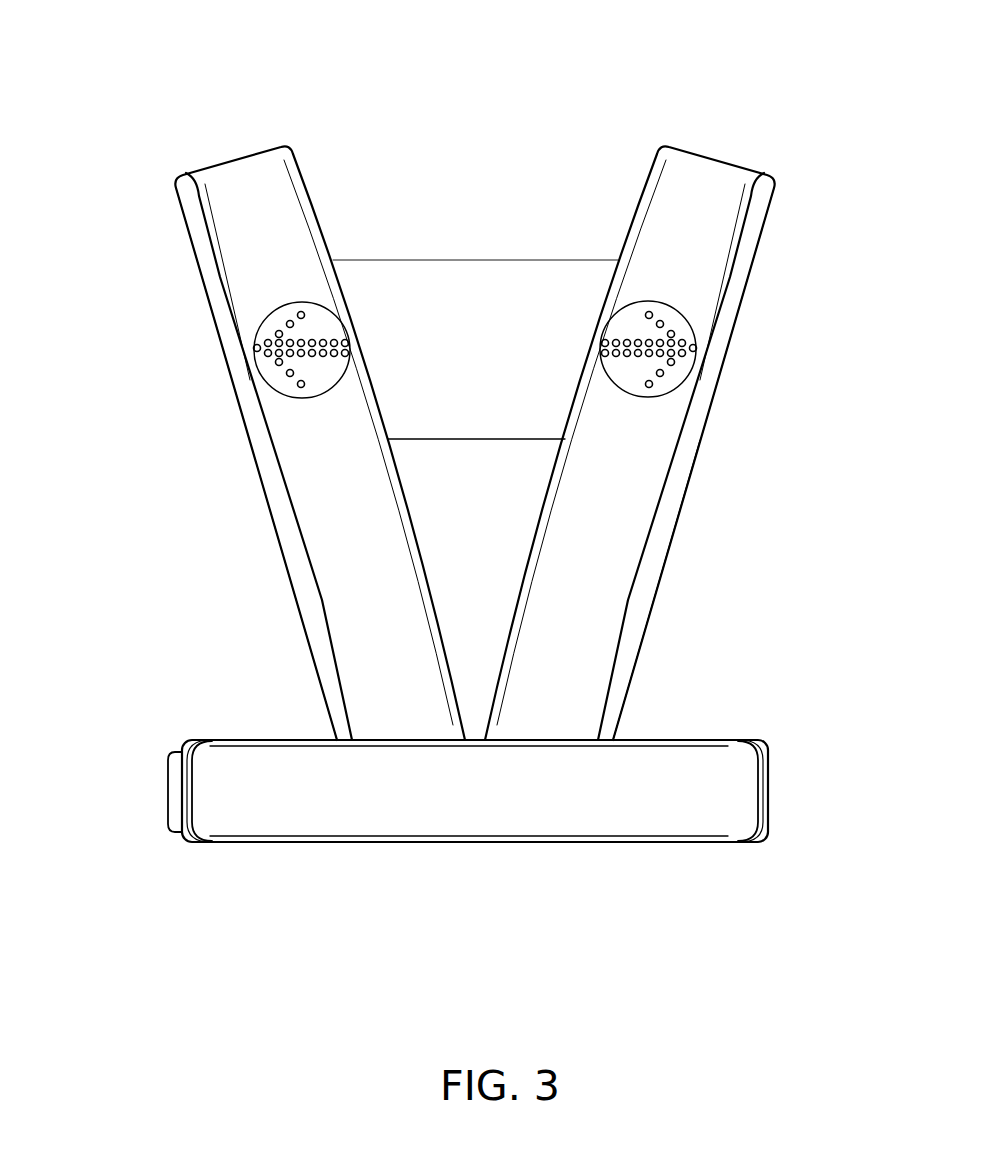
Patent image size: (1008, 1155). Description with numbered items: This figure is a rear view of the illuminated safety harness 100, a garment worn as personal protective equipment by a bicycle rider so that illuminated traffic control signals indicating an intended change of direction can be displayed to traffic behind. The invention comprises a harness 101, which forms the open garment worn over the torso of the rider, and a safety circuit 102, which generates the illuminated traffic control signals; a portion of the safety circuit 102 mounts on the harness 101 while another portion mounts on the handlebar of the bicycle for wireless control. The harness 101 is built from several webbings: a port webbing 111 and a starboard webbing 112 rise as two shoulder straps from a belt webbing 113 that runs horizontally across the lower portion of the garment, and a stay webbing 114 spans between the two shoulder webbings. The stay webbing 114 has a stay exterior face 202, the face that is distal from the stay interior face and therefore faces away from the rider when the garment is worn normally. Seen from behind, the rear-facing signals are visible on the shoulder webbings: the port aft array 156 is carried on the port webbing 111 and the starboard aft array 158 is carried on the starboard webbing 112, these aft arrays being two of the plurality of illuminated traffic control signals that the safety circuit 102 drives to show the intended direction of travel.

The illuminated safety harness 100 is at (130, 125).
The harness 101 is at (637, 658).
The safety circuit 102 is at (170, 788).
The port webbing 111 is at (233, 173).
The starboard webbing 112 is at (693, 177).
The belt webbing 113 is at (737, 788).
The stay webbing 114 is at (492, 260).
The port aft array 156 is at (258, 329).
The starboard aft array 158 is at (692, 323).
The stay exterior face 202 is at (428, 303).